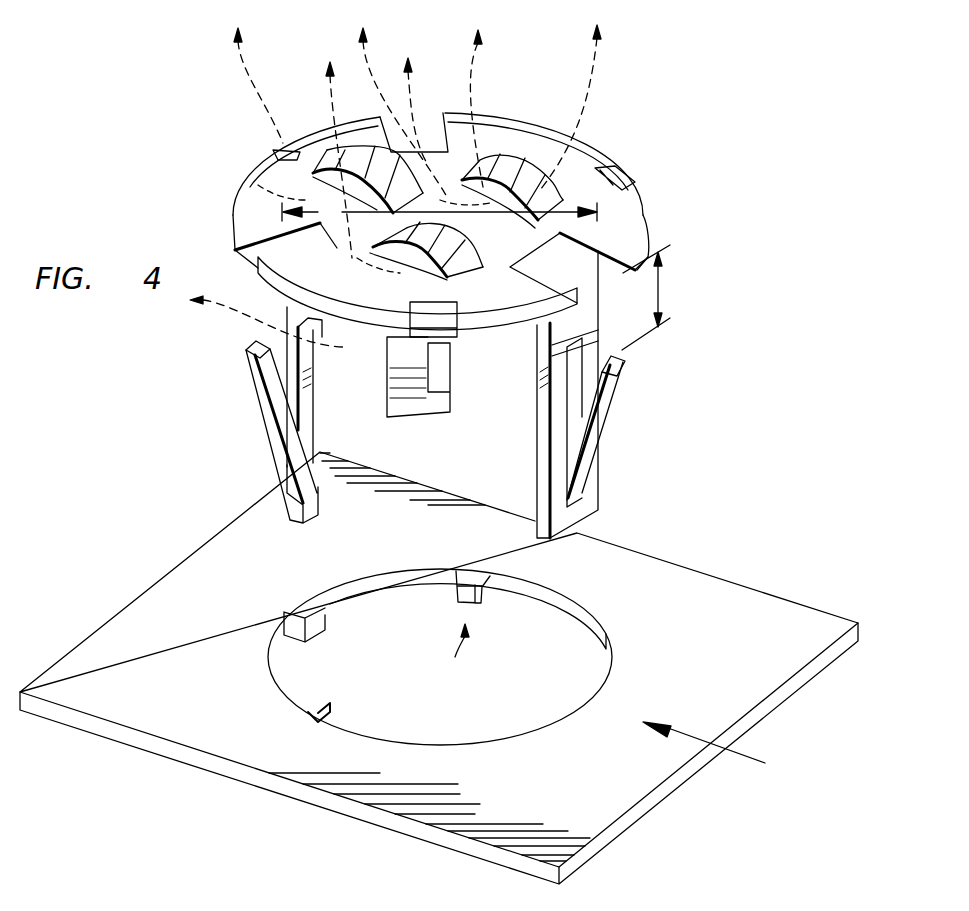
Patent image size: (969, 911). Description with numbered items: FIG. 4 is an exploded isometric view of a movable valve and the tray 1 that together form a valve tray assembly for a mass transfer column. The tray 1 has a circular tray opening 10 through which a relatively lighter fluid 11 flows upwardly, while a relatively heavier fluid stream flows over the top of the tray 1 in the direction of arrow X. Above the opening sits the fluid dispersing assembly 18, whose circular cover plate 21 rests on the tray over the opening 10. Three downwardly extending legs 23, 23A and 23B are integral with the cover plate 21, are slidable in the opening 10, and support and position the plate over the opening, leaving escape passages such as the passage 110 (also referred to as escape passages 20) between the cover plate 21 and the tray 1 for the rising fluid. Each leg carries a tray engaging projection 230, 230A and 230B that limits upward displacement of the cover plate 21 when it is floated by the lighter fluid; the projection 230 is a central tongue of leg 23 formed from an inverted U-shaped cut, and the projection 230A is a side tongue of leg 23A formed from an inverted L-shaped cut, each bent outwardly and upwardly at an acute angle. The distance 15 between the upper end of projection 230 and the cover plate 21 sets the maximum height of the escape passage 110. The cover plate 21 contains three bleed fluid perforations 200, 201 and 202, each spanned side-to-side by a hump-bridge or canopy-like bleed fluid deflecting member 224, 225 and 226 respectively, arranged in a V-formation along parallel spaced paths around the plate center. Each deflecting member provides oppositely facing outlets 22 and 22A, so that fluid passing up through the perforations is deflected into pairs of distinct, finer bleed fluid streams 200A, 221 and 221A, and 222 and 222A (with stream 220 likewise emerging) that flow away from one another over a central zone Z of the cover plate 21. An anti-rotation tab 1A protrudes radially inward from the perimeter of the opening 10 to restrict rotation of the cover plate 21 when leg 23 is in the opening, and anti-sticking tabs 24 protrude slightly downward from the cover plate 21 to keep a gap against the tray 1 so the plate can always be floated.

The tray 1 is at (740, 580).
The anti-rotation tab 1A is at (313, 703).
The tray opening 10 is at (550, 590).
The lighter fluid 11 is at (457, 656).
The distance 15 is at (660, 297).
The fluid dispersing assembly 18 is at (665, 177).
The fluid escape passage 20 is at (705, 131).
The cover plate 21 is at (640, 205).
The bleed fluid outlet 22 is at (523, 174).
The bleed fluid outlet 22A is at (490, 200).
The cover plate leg 23 is at (593, 496).
The cover plate leg 23A is at (420, 407).
The cover plate leg 23B is at (310, 418).
The anti-sticking tab 24 is at (622, 172).
The escape passage 110 is at (261, 321).
The bleed fluid perforation 200 is at (480, 183).
The bleed fluid stream 200A is at (592, 76).
The bleed fluid perforation 201 is at (410, 245).
The bleed fluid perforation 202 is at (350, 207).
The bleed fluid stream 220 is at (474, 68).
The bleed fluid stream 221 is at (328, 88).
The bleed fluid stream 221A is at (414, 92).
The bleed fluid stream 222 is at (248, 68).
The bleed fluid stream 222A is at (362, 68).
The bleed fluid deflecting member 224 is at (537, 158).
The bleed fluid deflecting member 225 is at (460, 253).
The bleed fluid deflecting member 226 is at (367, 160).
The tray engaging projection 230 is at (617, 386).
The tray engaging projection 230A is at (447, 360).
The tray engaging projection 230B is at (260, 385).
The direction of heavier fluid flow X is at (708, 742).
The central zone Z is at (439, 212).